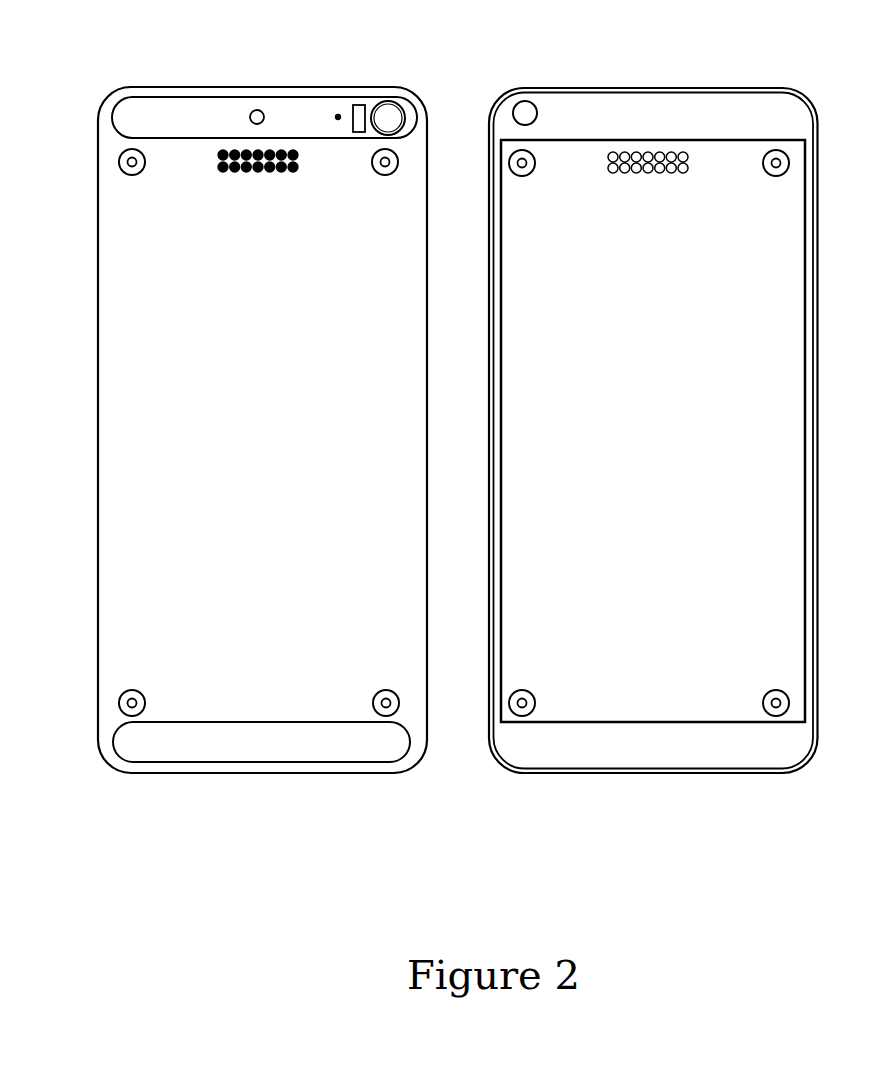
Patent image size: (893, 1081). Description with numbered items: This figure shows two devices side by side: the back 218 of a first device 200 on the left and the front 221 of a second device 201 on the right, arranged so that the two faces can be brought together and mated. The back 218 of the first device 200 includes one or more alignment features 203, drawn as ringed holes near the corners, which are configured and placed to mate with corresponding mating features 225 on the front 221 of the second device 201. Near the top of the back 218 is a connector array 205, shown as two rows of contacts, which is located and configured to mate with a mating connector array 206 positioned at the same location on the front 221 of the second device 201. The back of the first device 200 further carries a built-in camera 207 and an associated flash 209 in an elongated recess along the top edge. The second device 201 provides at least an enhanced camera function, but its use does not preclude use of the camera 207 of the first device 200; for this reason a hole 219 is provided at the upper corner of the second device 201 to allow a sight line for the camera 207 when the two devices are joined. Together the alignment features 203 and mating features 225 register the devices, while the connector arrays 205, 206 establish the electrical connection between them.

The first device 200 is at (253, 452).
The second device 201 is at (688, 448).
The alignment features 203 is at (132, 162).
The connector array 205 is at (278, 173).
The mating connector array 206 is at (670, 173).
The built-in camera 207 is at (390, 122).
The flash 209 is at (360, 110).
The back 218 is at (115, 515).
The hole 219 is at (522, 108).
The front 221 is at (788, 550).
The mating features 225 is at (777, 150).